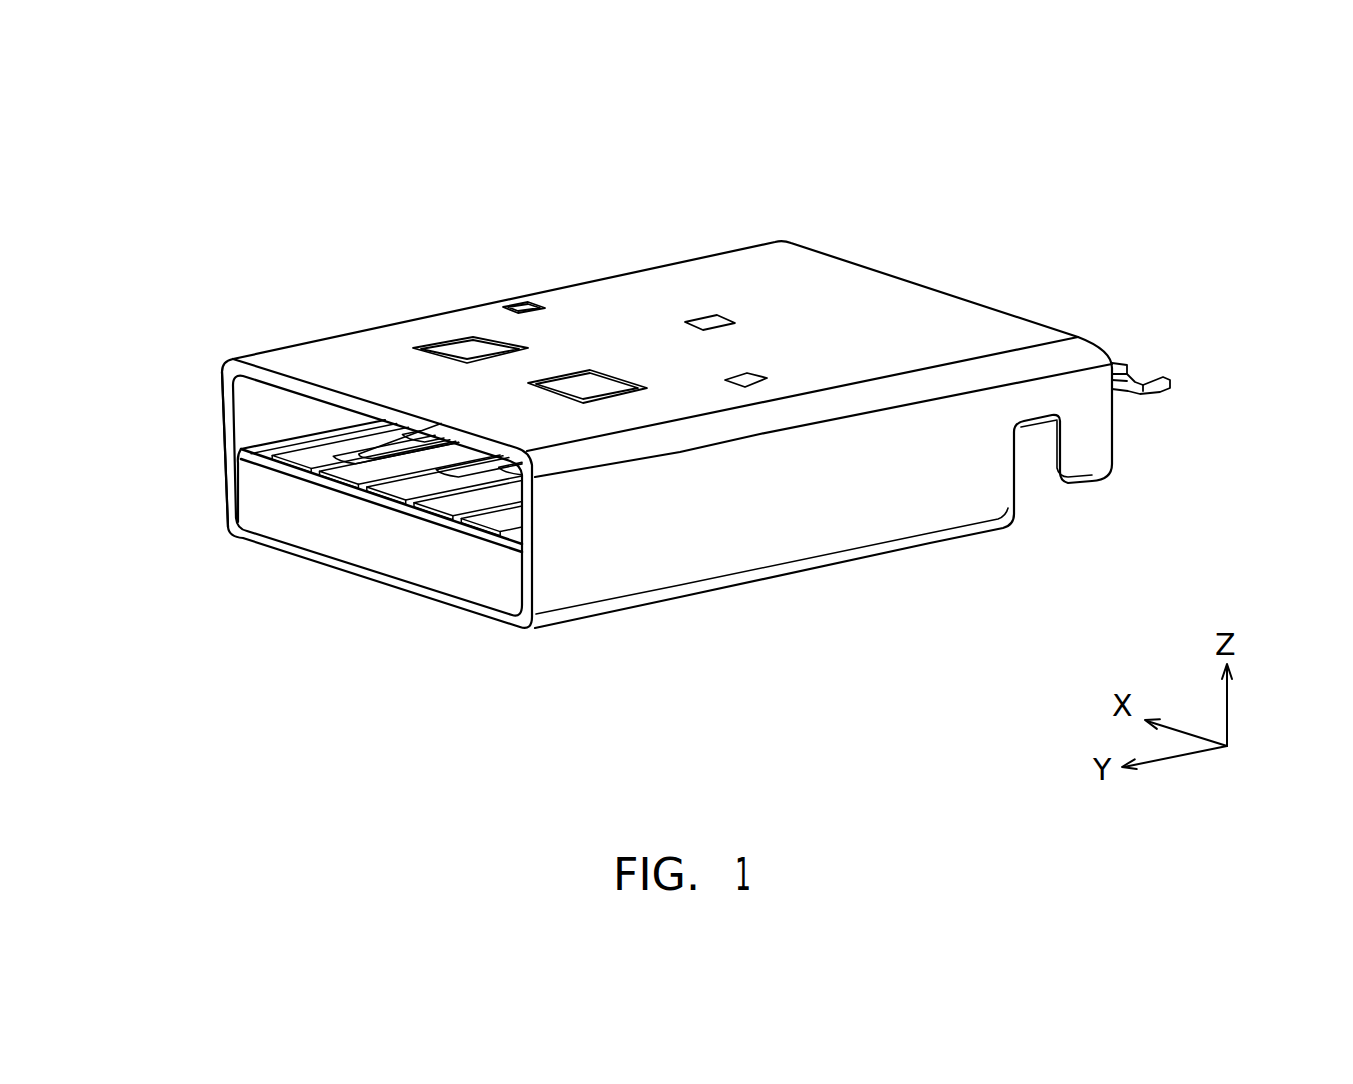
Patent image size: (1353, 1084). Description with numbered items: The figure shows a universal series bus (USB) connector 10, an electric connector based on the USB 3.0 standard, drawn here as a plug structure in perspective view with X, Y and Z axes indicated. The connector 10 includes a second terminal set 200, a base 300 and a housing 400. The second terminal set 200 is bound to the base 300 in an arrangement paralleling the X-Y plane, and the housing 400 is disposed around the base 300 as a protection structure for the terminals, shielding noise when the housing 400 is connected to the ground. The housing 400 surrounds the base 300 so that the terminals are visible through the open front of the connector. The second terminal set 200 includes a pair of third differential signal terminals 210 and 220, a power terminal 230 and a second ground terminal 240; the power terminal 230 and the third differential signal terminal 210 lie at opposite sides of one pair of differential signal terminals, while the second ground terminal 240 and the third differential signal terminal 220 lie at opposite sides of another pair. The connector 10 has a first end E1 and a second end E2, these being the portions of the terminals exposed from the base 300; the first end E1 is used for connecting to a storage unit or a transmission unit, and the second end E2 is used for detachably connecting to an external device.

The universal series bus (USB) connector 10 is at (125, 189).
The second terminal set 200 is at (345, 222).
The third differential signal terminal 210 is at (440, 468).
The third differential signal terminal 220 is at (368, 456).
The power terminal 230 is at (508, 470).
The second ground terminal 240 is at (346, 457).
The base 300 is at (387, 543).
The housing 400 is at (740, 540).
The first end E1 is at (1215, 395).
The second end E2 is at (166, 440).